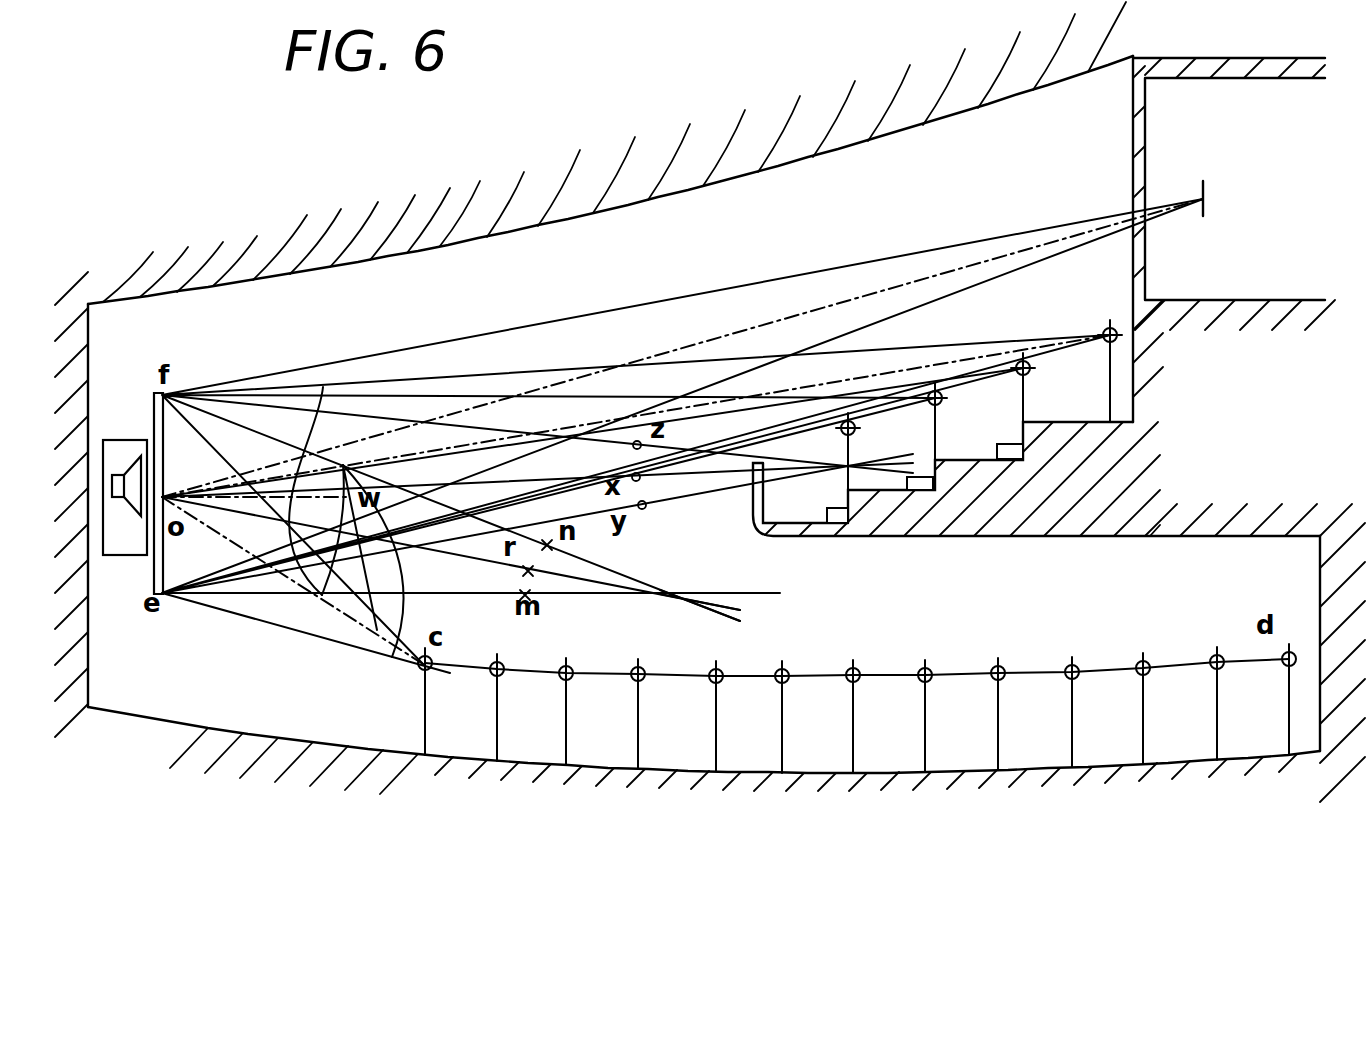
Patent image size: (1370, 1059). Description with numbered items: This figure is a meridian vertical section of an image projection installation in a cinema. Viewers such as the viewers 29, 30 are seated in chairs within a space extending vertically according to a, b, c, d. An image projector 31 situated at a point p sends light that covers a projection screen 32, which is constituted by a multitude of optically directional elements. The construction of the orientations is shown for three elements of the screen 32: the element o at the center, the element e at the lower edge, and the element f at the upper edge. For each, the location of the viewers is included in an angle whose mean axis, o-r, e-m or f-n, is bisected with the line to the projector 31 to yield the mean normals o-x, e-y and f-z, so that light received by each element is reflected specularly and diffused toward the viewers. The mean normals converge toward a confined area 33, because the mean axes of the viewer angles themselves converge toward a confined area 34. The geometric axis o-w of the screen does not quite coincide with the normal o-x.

The viewer 29 is at (859, 667).
The viewer 30 is at (938, 404).
The image projector 31 is at (1207, 197).
The projection screen 32 is at (152, 427).
The confined area 33 is at (856, 431).
The confined area 34 is at (686, 598).